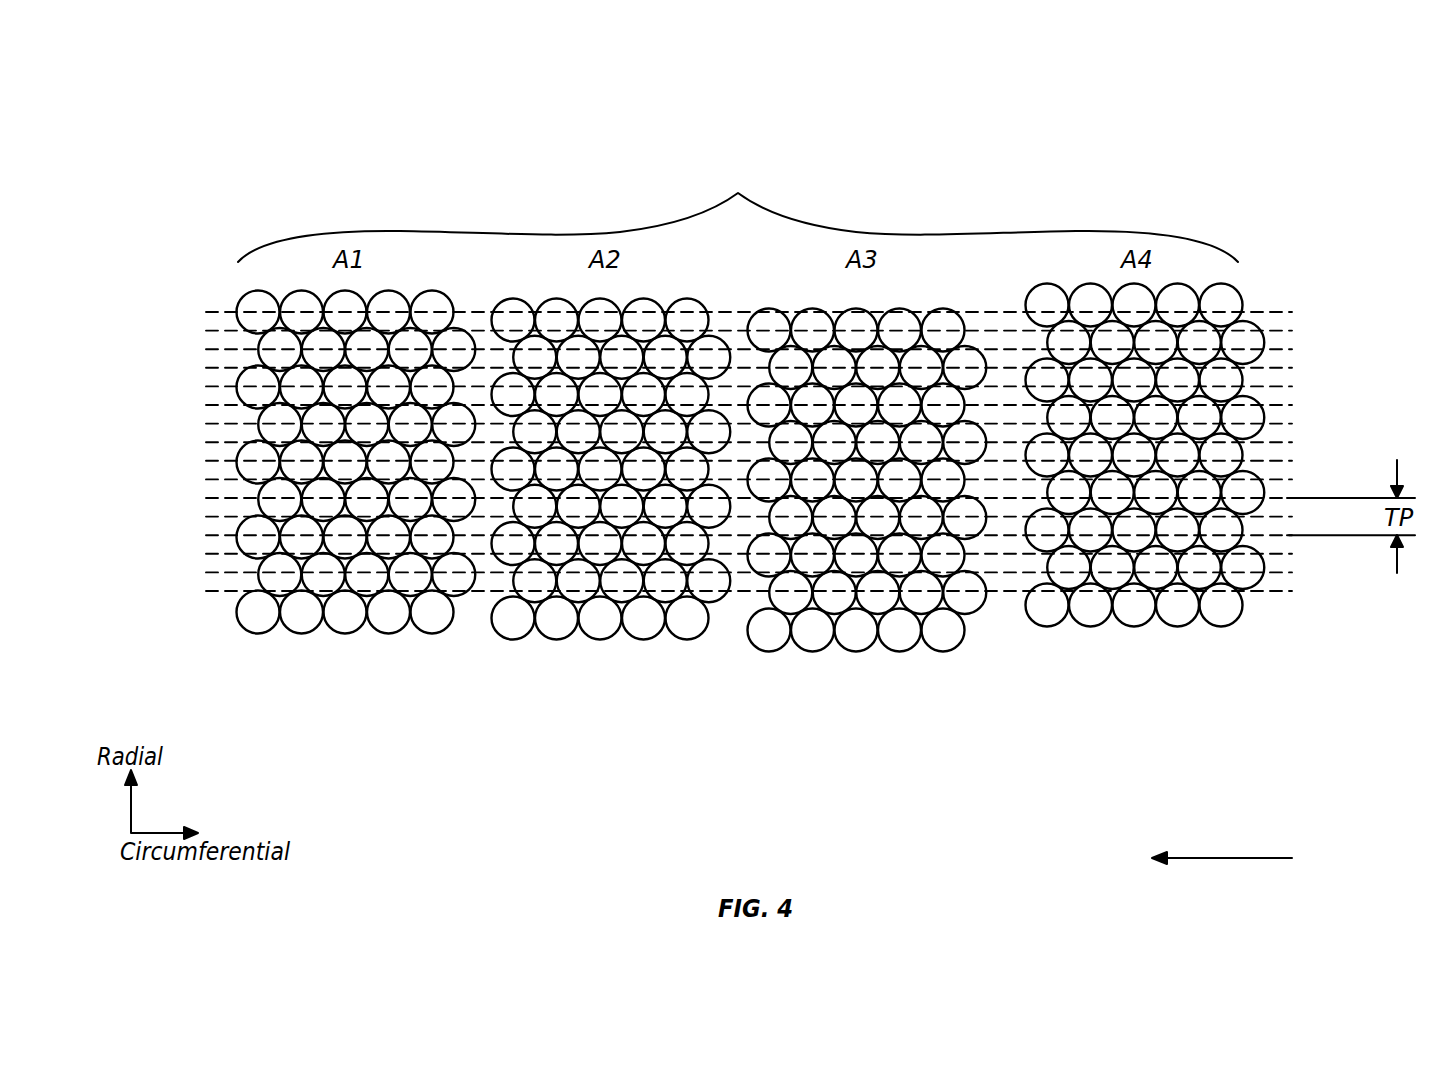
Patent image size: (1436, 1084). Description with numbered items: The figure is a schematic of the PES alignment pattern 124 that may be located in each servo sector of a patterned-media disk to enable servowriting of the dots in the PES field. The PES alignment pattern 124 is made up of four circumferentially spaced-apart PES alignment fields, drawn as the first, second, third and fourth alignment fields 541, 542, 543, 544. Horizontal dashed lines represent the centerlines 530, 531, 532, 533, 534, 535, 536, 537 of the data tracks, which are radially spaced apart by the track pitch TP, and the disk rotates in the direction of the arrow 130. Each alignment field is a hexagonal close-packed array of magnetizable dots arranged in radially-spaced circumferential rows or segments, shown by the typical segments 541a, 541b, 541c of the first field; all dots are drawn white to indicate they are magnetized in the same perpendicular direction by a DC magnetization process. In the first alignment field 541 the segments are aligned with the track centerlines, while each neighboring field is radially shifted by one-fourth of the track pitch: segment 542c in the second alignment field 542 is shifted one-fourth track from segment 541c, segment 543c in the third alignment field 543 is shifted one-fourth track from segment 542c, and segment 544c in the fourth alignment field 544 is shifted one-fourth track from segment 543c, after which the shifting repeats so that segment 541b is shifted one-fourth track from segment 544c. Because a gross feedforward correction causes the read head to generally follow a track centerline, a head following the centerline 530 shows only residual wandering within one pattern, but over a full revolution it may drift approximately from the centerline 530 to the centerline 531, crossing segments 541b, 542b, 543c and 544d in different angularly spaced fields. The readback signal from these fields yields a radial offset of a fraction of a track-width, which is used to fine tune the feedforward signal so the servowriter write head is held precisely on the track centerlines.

The PES alignment pattern 124 is at (738, 196).
The arrow 130 is at (1222, 858).
The track centerline 530 is at (1242, 574).
The track centerline 531 is at (1286, 530).
The track centerline 532 is at (1287, 498).
The track centerline 533 is at (1290, 462).
The track centerline 534 is at (1283, 424).
The track centerline 535 is at (1286, 387).
The track centerline 536 is at (1273, 349).
The track centerline 537 is at (1258, 312).
The alignment field 541 is at (294, 548).
The segment 541a is at (228, 593).
The segment 541b is at (492, 555).
The segment 541c is at (228, 555).
The alignment field 542 is at (693, 552).
The segment 542b is at (715, 523).
The segment 542c is at (745, 555).
The alignment field 543 is at (940, 557).
The segment 543c is at (965, 537).
The alignment field 544 is at (1188, 544).
The segment 544c is at (1240, 553).
The segment 544d is at (1243, 511).